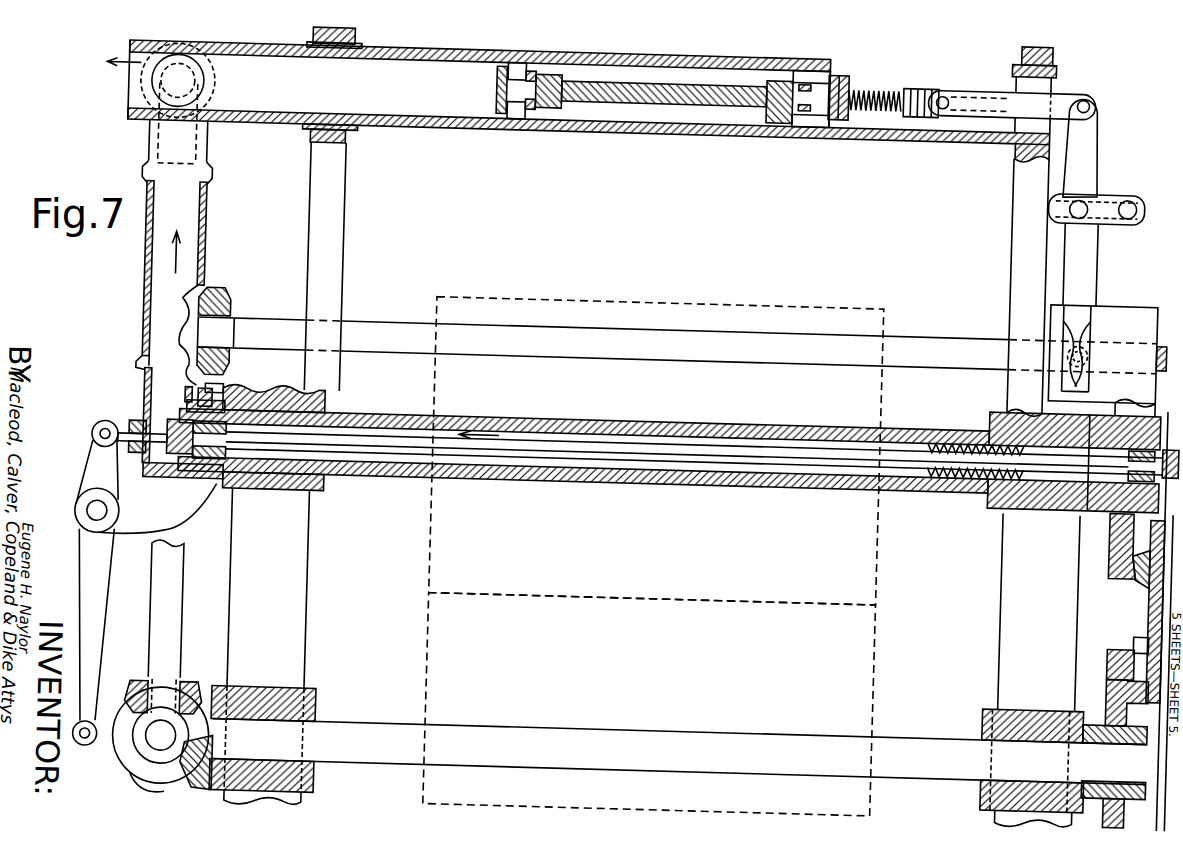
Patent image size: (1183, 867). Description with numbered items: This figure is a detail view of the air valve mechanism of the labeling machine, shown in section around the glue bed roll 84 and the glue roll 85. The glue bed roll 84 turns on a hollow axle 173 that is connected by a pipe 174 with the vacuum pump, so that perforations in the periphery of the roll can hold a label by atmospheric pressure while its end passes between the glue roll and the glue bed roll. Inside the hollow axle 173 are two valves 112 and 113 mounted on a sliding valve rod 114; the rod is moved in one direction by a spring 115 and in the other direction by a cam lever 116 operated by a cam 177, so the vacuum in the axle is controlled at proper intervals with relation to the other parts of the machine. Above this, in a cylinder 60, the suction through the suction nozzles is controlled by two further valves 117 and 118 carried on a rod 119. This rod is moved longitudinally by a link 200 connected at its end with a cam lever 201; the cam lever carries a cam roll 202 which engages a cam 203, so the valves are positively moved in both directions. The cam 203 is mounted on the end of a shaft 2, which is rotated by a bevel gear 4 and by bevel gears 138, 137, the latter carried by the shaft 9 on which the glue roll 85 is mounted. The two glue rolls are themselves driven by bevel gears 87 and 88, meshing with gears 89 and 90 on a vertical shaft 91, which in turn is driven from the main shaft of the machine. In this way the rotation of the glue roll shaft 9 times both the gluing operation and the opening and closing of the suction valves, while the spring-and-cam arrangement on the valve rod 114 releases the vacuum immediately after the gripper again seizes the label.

The cylinder housing tube 60 is at (449, 119).
The valve 118 is at (498, 62).
The rod 119 is at (648, 62).
The valve 117 is at (839, 62).
The link 200 is at (1068, 70).
The cam lever 201 is at (1088, 133).
The cam 203 is at (1101, 283).
The cam roll 202 is at (1098, 313).
The glue bed roll 84 is at (769, 279).
The glue roll 85 is at (892, 639).
The shaft 2 is at (945, 321).
The pipe 174 is at (165, 304).
The bevel gear 4 is at (243, 305).
The valve 113 is at (178, 429).
The hollow axle 173 is at (661, 397).
The sliding valve rod 114 is at (834, 432).
The valve 112 is at (1179, 408).
The spring 115 is at (957, 456).
The bevel gear 87 is at (1108, 521).
The gear 89 is at (1155, 552).
The gear 90 is at (1157, 617).
The bevel gear 88 is at (1124, 676).
The shaft 9 is at (589, 721).
The cam lever 116 is at (119, 593).
The cam 177 is at (127, 706).
The bevel gear 138 is at (213, 683).
The bevel gear 137 is at (232, 758).
The vertical shaft 91 is at (1180, 806).